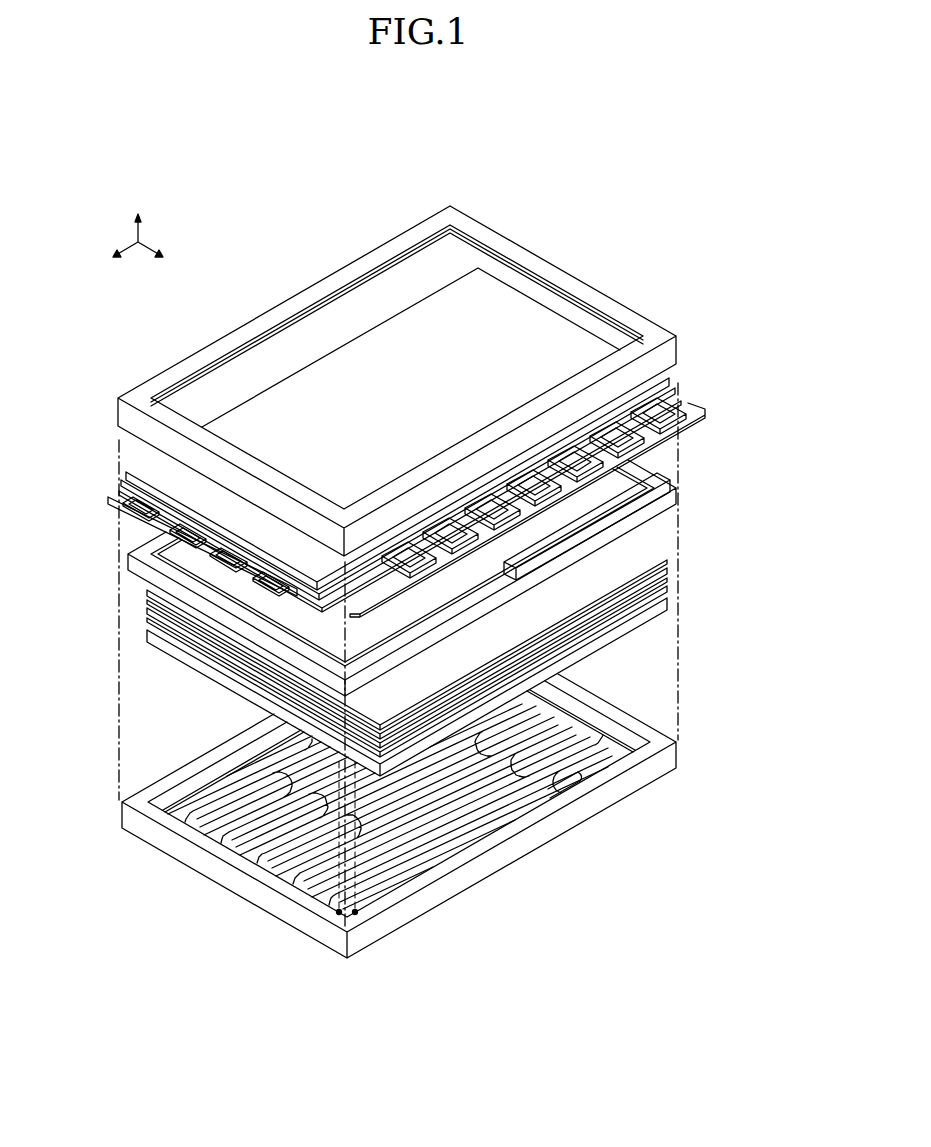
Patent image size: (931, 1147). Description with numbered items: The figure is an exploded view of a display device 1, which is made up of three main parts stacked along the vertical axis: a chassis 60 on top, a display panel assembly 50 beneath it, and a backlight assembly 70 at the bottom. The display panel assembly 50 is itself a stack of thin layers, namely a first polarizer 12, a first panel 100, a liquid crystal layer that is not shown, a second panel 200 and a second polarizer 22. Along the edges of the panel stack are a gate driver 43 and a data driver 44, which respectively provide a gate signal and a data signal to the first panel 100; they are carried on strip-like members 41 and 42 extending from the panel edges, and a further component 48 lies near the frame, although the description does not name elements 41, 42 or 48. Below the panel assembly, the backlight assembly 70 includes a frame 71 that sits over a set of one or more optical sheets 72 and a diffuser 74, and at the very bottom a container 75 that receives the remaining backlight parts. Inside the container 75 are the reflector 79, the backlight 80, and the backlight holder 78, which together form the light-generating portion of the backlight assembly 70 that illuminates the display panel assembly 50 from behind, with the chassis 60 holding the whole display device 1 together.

The display device 1 is at (433, 177).
The display panel assembly 50 is at (388, 358).
The chassis 60 is at (645, 318).
The first panel 100 is at (688, 400).
The second polarizer 22 is at (670, 381).
The second panel 200 is at (677, 392).
The first polarizer 12 is at (683, 404).
The flexible printed circuit film 42 is at (706, 413).
The data driver 44 is at (673, 421).
The flexible printed circuit film 41 is at (110, 498).
The gate driver 43 is at (130, 516).
The backlight assembly 70 is at (748, 480).
The frame 71 is at (683, 492).
The light source unit 48 is at (600, 528).
The optical sheets 72 is at (690, 575).
The diffuser 74 is at (668, 600).
The container 75 is at (680, 746).
The backlight holder 78 is at (636, 744).
The reflector 79 is at (588, 755).
The backlight 80 is at (578, 786).